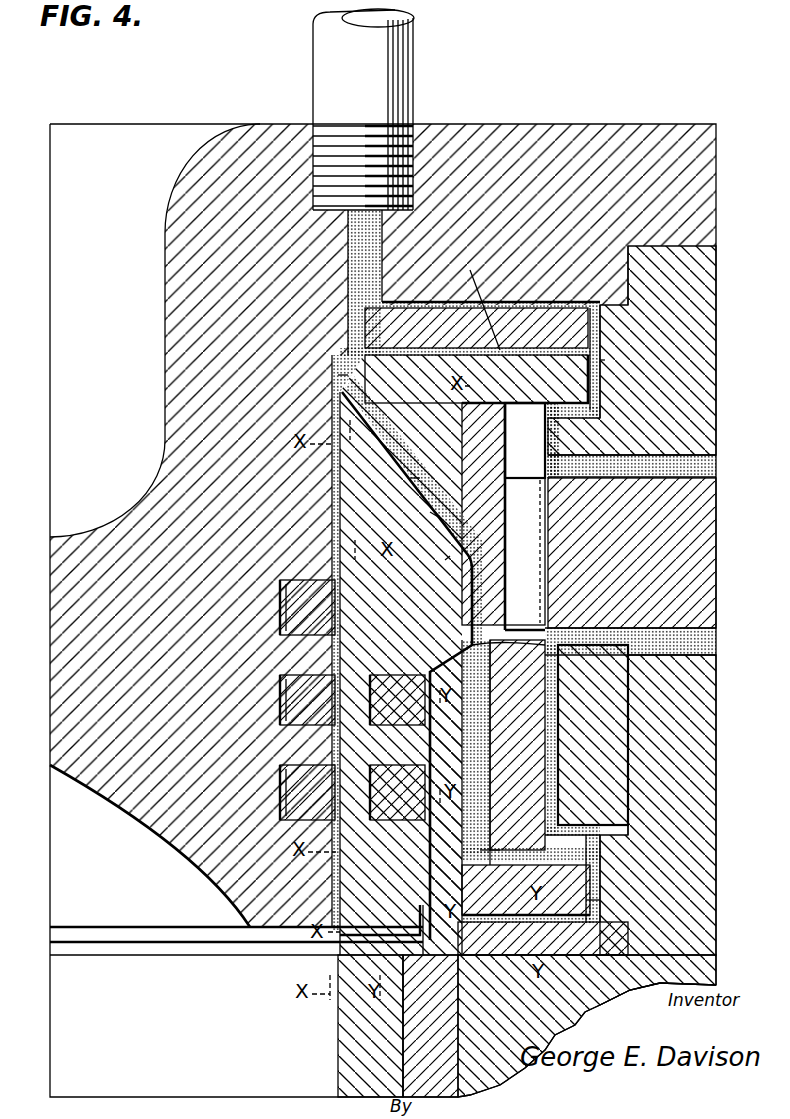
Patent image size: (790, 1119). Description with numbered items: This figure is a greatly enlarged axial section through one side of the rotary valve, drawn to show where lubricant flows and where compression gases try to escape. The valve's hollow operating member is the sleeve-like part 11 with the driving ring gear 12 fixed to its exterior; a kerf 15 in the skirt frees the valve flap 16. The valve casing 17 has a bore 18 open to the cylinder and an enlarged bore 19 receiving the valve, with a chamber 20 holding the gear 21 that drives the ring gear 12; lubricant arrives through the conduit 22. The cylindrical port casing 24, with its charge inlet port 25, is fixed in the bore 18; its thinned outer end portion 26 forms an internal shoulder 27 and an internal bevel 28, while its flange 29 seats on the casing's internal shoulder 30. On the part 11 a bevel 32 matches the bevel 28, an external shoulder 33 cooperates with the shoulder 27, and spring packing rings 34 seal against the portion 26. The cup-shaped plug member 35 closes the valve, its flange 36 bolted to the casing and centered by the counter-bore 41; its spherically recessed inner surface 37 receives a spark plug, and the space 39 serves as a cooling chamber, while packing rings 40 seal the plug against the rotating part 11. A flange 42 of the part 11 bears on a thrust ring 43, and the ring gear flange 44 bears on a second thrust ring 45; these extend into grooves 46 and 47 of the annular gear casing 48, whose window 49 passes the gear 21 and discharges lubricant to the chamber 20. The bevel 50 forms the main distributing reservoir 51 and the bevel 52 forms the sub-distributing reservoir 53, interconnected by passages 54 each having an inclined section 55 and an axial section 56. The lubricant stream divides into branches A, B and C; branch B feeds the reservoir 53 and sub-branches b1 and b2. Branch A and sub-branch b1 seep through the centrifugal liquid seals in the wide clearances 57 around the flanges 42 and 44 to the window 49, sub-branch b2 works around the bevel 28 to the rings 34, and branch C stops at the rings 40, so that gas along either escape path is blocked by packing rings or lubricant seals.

The sleeve-like part 11 is at (336, 512).
The driving ring gear 12 is at (488, 456).
The kerf 15 is at (188, 950).
The valve flap 16 is at (365, 1050).
The valve casing 17 is at (690, 714).
The bore 18 is at (460, 1022).
The enlarged bore 19 is at (635, 772).
The chamber 20 is at (700, 470).
The gear 21 is at (686, 568).
The conduit 22 is at (330, 75).
The port casing 24 is at (445, 1065).
The charge inlet port 25 is at (346, 266).
The outer end portion 26 is at (430, 740).
The internal shoulder 27 is at (420, 968).
The internal bevel 28 is at (525, 639).
The flange 29 is at (612, 948).
The internal shoulder 30 is at (588, 965).
The bevel 32 is at (445, 640).
The external shoulder 33 is at (412, 930).
The spring packing rings 34 is at (395, 812).
The plug member 35 is at (190, 445).
The flange 36 is at (688, 226).
The spherically recessed inner surface 37 is at (115, 908).
The space 39 is at (135, 160).
The packing rings 40 is at (300, 700).
The counter-bore 41 is at (618, 279).
The flange 42 is at (574, 378).
The thrust ring 43 is at (515, 330).
The flange 44 is at (602, 852).
The second thrust ring 45 is at (590, 905).
The groove 46 is at (605, 345).
The groove 47 is at (605, 832).
The annular gear casing 48 is at (610, 740).
The window 49 is at (600, 458).
The bevel 50 is at (360, 378).
The annular groove 51 is at (336, 374).
The bevel 52 is at (488, 822).
The annular groove 53 is at (488, 870).
The passages 54 is at (448, 558).
The inclined section 55 is at (436, 514).
The axial section 56 is at (480, 650).
The clearances 57 is at (602, 360).
The lubricant branch A is at (503, 352).
The lubricant branch B is at (412, 480).
The lubricant branch C is at (334, 477).
The sub-branch b1 is at (500, 940).
The sub-branch b2 is at (478, 718).